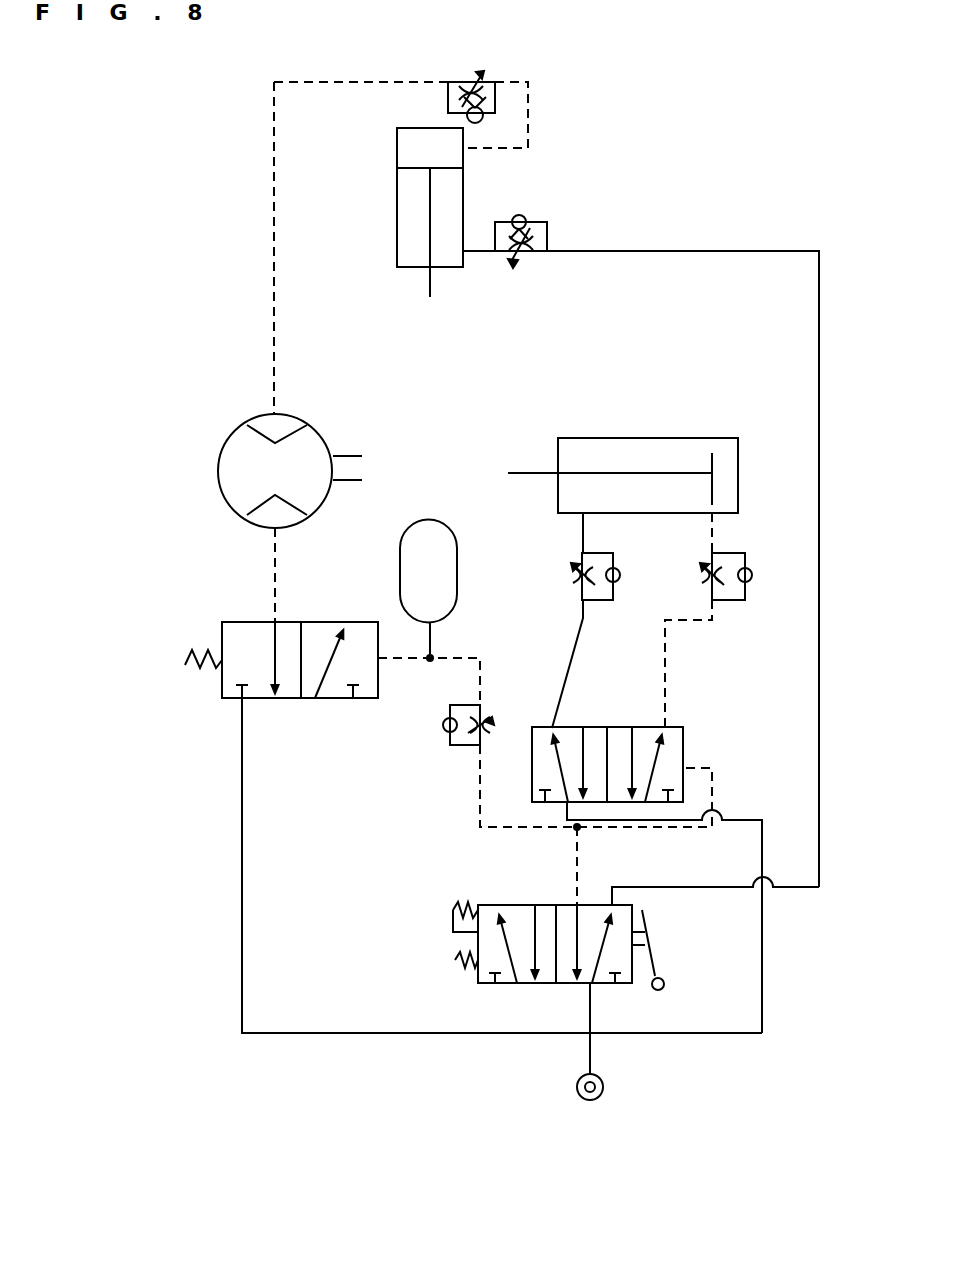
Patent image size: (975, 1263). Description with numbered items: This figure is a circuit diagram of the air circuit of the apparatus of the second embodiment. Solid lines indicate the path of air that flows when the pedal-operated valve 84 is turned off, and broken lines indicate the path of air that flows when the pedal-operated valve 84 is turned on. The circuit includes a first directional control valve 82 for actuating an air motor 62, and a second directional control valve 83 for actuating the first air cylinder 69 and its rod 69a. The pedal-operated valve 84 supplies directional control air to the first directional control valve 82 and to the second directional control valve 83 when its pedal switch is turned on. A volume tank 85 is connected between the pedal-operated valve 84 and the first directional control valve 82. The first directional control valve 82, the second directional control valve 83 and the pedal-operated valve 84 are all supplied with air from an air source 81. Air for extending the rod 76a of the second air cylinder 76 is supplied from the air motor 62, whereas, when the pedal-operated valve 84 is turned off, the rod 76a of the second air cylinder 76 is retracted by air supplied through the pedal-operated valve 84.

The air motor 62 is at (241, 438).
The first air cylinder 69 is at (592, 450).
The rod of the first air cylinder 69a is at (534, 472).
The second air cylinder 76 is at (452, 198).
The rod of the second air cylinder 76a is at (430, 287).
The air source 81 is at (578, 1096).
The first directional control valve 82 is at (240, 622).
The second directional control valve 83 is at (673, 727).
The pedal-operated valve 84 is at (505, 984).
The volume tank 85 is at (413, 532).